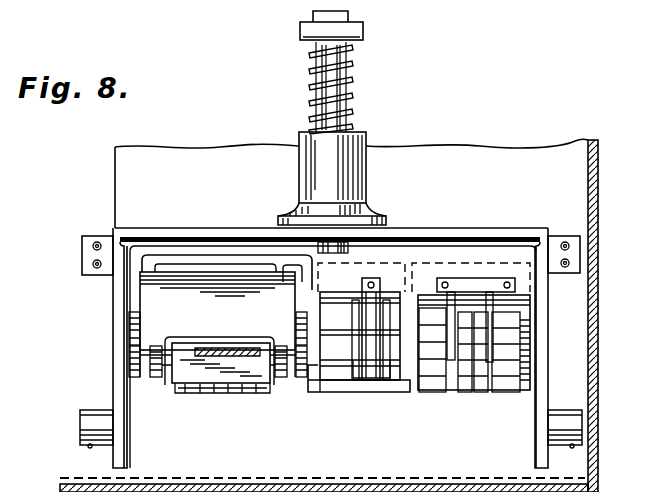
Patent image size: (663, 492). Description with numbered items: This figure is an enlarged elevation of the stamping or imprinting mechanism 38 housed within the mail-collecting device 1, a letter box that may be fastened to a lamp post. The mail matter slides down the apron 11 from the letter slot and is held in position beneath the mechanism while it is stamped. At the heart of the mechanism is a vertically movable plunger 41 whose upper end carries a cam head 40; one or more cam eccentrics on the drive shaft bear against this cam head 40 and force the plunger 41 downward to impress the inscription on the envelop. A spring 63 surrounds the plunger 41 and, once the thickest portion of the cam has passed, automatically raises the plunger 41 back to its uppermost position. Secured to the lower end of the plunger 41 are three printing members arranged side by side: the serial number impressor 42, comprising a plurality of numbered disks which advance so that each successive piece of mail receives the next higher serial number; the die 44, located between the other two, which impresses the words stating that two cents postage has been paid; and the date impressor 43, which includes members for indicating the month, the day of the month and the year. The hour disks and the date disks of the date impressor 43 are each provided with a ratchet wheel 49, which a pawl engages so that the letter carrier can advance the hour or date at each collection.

The mail-collecting device 1 is at (597, 342).
The apron 11 is at (378, 478).
The stamping or imprinting mechanism 38 is at (414, 229).
The cam head 40 is at (355, 30).
The plunger 41 is at (349, 95).
The spring 63 is at (311, 70).
The serial number impressor 42 is at (200, 392).
The die 44 is at (325, 386).
The ratchet wheel 49 is at (360, 380).
The date impressor 43 is at (472, 392).